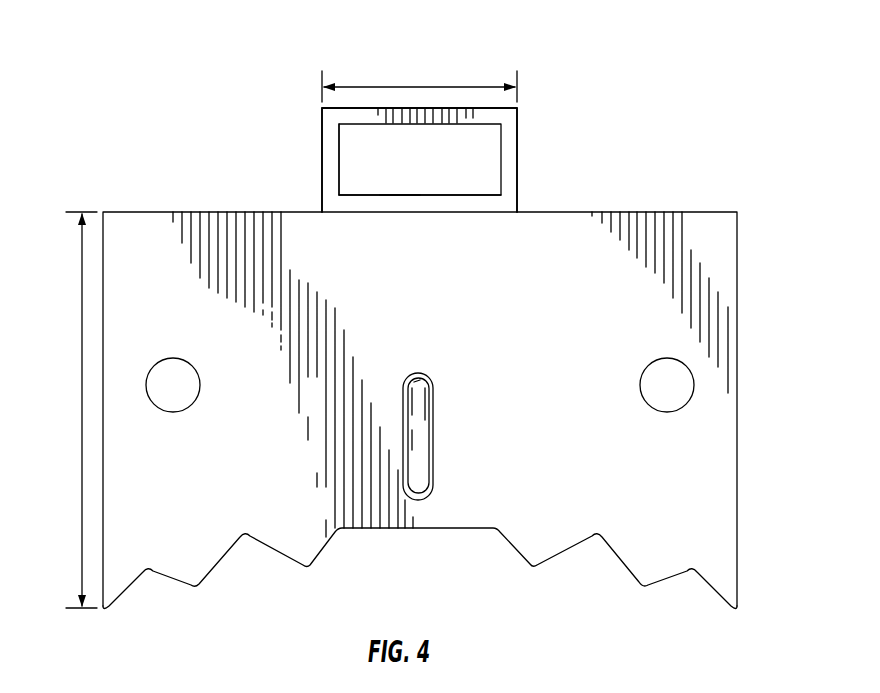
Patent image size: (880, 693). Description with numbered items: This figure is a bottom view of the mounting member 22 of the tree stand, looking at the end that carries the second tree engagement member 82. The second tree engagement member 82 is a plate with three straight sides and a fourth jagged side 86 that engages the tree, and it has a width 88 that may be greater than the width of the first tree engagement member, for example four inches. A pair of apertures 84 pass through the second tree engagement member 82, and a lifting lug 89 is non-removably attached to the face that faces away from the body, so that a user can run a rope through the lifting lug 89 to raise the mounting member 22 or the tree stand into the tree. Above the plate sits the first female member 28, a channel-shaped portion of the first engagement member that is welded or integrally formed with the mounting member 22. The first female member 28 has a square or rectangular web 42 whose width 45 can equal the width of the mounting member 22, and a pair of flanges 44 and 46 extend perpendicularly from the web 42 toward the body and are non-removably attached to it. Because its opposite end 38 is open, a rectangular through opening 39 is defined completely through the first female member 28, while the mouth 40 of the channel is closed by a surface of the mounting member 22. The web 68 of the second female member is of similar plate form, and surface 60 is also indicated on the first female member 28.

The mounting member 22 is at (136, 180).
The first female member 28 is at (529, 148).
The opposite end 38 is at (324, 172).
The through opening 39 is at (395, 166).
The mouth 40 is at (398, 190).
The web 42 is at (478, 115).
The flange 44 is at (333, 157).
The width 45 is at (422, 80).
The flange 46 is at (512, 177).
The inner bottom surface 60 is at (427, 195).
The web 68 is at (355, 112).
The second tree engagement member 82 is at (445, 337).
The apertures 84 is at (183, 385).
The jagged side 86 is at (463, 536).
The width 88 is at (78, 335).
The lifting lug 89 is at (420, 443).